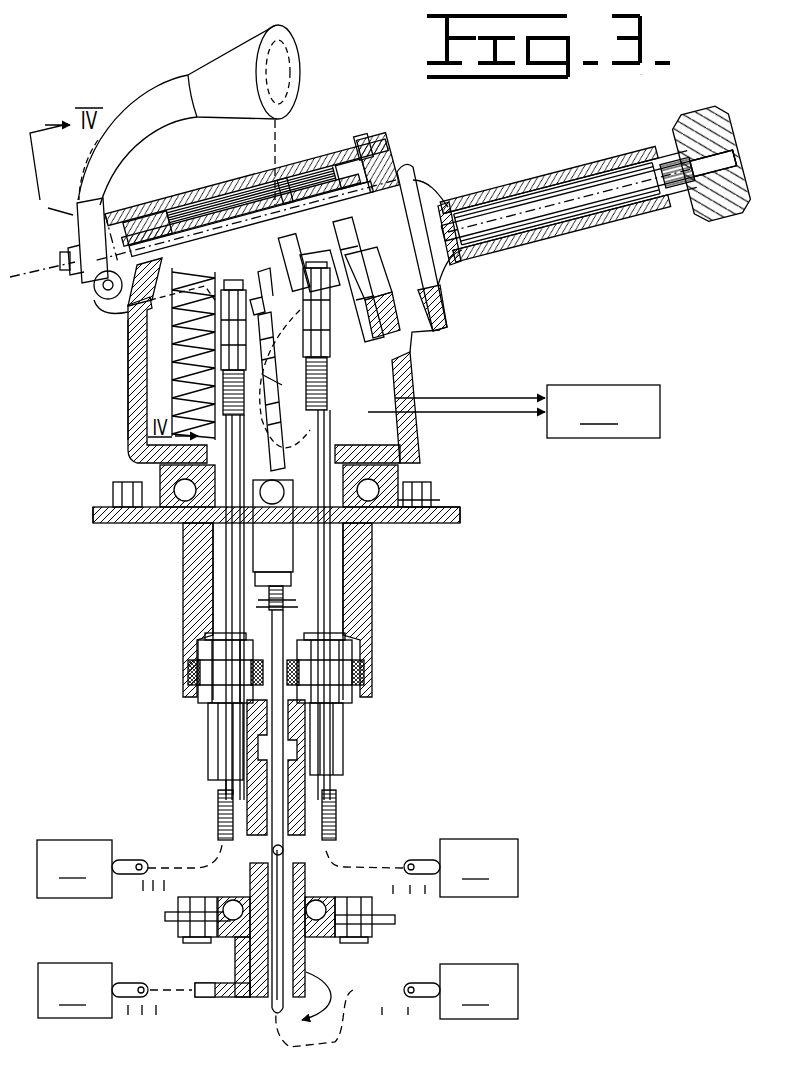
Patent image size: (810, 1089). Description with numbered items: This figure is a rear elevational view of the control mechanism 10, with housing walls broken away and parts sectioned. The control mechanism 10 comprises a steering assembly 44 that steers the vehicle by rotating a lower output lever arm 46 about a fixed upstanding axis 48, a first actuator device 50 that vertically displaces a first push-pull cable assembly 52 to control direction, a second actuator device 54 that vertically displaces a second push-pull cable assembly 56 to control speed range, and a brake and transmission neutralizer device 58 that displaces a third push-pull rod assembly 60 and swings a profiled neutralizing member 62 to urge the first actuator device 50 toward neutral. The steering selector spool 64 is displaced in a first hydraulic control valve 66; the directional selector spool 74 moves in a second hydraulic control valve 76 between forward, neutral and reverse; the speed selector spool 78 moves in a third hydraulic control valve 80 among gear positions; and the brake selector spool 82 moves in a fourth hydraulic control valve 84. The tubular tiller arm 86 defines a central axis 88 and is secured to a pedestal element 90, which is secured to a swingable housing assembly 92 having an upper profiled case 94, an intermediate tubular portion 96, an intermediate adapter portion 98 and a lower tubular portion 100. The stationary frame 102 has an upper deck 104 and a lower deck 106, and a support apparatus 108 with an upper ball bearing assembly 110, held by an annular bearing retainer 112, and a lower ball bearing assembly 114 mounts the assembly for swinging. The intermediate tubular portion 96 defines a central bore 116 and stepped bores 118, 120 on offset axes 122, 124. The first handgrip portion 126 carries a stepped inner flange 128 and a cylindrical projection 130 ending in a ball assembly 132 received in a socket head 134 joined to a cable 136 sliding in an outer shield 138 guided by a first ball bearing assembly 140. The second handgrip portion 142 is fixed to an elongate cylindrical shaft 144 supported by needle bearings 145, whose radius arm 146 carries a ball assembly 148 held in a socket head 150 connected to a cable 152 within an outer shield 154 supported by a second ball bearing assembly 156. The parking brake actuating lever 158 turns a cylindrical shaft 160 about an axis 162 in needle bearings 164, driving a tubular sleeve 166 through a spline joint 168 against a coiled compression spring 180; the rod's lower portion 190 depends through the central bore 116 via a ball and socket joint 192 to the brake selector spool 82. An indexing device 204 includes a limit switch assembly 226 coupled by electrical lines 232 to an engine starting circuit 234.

The control mechanism 10 is at (584, 322).
The steering assembly 44 is at (385, 138).
The output lever arm 46 is at (214, 967).
The upstanding axis 48 is at (316, 767).
The first actuator device 50 is at (555, 196).
The first push-pull cable assembly 52 is at (372, 610).
The second actuator device 54 is at (703, 151).
The second push-pull cable assembly 56 is at (183, 610).
The brake and transmission neutralizer device 58 is at (226, 102).
The third push-pull rod assembly 60 is at (225, 621).
The profiled neutralizing member 62 is at (309, 261).
The steering selector spool 64 is at (137, 987).
The first hydraulic control valve 66 is at (75, 990).
The directional selector spool 74 is at (423, 861).
The second hydraulic control valve 76 is at (479, 868).
The speed selector spool 78 is at (133, 857).
The third hydraulic control valve 80 is at (74, 869).
The brake selector spool 82 is at (423, 985).
The fourth hydraulic control valve 84 is at (479, 991).
The tubular tiller arm 86 is at (464, 213).
The central axis 88 is at (588, 210).
The pedestal element 90 is at (429, 228).
The swingable housing assembly 92 is at (146, 381).
The upper profiled case 94 is at (110, 380).
The intermediate tubular portion 96 is at (244, 611).
The intermediate adapter portion 98 is at (205, 741).
The lower tubular portion 100 is at (253, 930).
The stationary frame 102 is at (253, 498).
The upper deck 104 is at (283, 534).
The lower deck 106 is at (161, 920).
The support apparatus 108 is at (307, 486).
The upper ball bearing assembly 110 is at (161, 509).
The annular bearing retainer 112 is at (450, 513).
The lower ball bearing assembly 114 is at (307, 935).
The central bore 116 is at (196, 668).
The stepped bore 118 is at (165, 671).
The stepped bore 120 is at (357, 668).
The upstanding axis 122 is at (193, 769).
The upstanding axis 124 is at (358, 739).
The first handgrip portion 126 is at (557, 184).
The stepped inner flange 128 is at (457, 309).
The cylindrical projection 130 is at (363, 250).
The ball assembly 132 is at (329, 324).
The socket head 134 is at (332, 383).
The cable 136 is at (383, 599).
The outer shield 138 is at (357, 605).
The first ball bearing assembly 140 is at (355, 676).
The second handgrip portion 142 is at (714, 207).
The elongate cylindrical shaft 144 is at (557, 227).
The needle bearings 145 is at (651, 149).
The radius arm 146 is at (251, 218).
The ball assembly 148 is at (147, 322).
The socket head 150 is at (181, 354).
The cable 152 is at (227, 574).
The outer shield 154 is at (200, 607).
The second ball bearing assembly 156 is at (196, 684).
The parking brake actuating lever 158 is at (137, 125).
The cylindrical shaft 160 is at (147, 203).
The axis 162 is at (41, 284).
The needle bearings 164 is at (203, 195).
The tubular sleeve 166 is at (251, 179).
The spline joint 168 is at (295, 168).
The coiled compression spring 180 is at (122, 297).
The lower portion 190 is at (338, 799).
The ball and socket joint 192 is at (273, 533).
The indexing device 204 is at (313, 369).
The limit switch assembly 226 is at (415, 304).
The electrical lines 232 is at (456, 391).
The engine starting circuit 234 is at (603, 411).